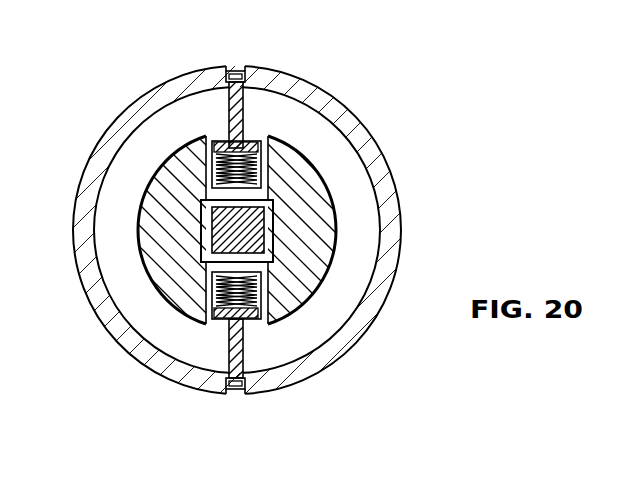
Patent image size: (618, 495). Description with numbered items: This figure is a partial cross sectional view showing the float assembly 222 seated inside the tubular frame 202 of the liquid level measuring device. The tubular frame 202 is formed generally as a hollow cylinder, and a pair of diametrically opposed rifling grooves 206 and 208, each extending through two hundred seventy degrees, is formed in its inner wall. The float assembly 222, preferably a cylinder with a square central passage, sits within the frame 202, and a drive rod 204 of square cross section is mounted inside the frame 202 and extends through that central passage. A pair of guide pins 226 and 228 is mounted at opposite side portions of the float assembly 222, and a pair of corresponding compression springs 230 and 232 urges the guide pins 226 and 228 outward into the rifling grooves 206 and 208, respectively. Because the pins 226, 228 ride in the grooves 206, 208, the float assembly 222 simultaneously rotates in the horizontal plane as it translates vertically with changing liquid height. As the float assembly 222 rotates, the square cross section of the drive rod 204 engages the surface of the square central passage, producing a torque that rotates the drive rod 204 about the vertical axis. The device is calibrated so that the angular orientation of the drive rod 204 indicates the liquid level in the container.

The tubular frame 202 is at (402, 247).
The drive rod 204 is at (274, 218).
The rifling groove 206 is at (220, 400).
The rifling groove 208 is at (220, 65).
The float assembly 222 is at (312, 140).
The guide pin 226 is at (245, 342).
The guide pin 228 is at (244, 106).
The compression spring 230 is at (288, 330).
The compression spring 232 is at (195, 130).